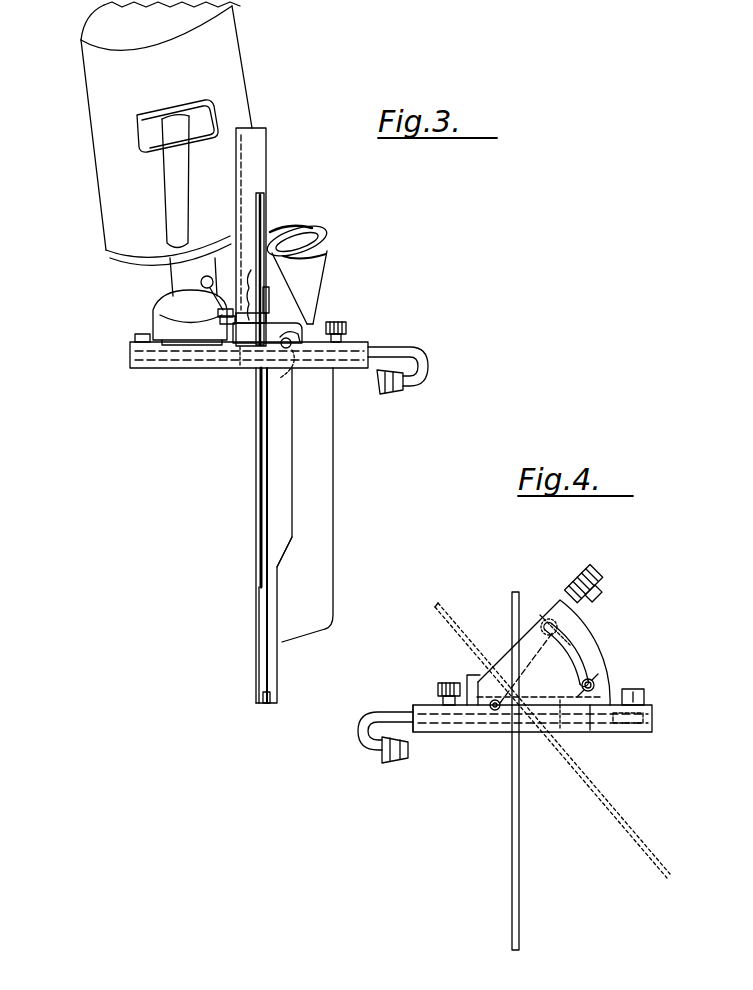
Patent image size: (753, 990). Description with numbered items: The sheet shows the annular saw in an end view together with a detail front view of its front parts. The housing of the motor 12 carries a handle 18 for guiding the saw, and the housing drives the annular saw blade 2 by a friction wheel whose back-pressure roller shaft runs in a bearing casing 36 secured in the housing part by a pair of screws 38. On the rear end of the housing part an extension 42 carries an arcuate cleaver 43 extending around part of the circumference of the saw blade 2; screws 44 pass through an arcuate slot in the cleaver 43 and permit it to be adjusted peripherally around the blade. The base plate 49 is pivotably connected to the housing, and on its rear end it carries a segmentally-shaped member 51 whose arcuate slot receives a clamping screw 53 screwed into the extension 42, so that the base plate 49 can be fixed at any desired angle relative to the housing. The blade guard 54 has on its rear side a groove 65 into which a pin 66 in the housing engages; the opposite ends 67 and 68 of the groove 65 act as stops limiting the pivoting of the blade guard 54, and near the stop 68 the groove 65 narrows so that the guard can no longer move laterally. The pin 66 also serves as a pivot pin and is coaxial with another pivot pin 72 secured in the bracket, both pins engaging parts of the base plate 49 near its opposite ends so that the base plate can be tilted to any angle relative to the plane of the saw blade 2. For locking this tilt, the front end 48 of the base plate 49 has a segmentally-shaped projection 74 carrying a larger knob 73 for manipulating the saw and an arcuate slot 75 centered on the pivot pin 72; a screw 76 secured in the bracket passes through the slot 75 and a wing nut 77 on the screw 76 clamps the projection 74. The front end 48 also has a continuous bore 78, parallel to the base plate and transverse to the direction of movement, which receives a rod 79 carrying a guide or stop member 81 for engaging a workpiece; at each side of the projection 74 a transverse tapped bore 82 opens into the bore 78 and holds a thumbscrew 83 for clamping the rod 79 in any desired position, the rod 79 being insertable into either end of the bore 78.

In FIG. 3, the motor 12 is at (233, 60).
In FIG. 3, the handle 18 is at (170, 183).
In FIG. 3, the clamping screw 53 is at (160, 318).
In FIG. 3, the segmentally-shaped member 51 is at (266, 153).
In FIG. 3, the arcuate cleaver 43 is at (265, 196).
In FIG. 3, the bearing casing 36 is at (322, 240).
In FIG. 3, the screws 38 is at (302, 230).
In FIG. 3, the extension 42 is at (226, 344).
In FIG. 3, the screws 44 is at (250, 328).
In FIG. 3, the pin 66 is at (302, 335).
In FIG. 3, the thumbscrew 83 is at (347, 330).
In FIG. 4, the thumbscrew 83 is at (455, 683).
In FIG. 3, the base plate 49 is at (150, 369).
In FIG. 4, the base plate 49 is at (440, 735).
In FIG. 3, the continuous bore 78 is at (238, 368).
In FIG. 4, the continuous bore 78 is at (560, 729).
In FIG. 3, the end of groove 67 is at (292, 368).
In FIG. 3, the rod 79 is at (396, 347).
In FIG. 4, the rod 79 is at (392, 711).
In FIG. 3, the guide or stop member 81 is at (384, 395).
In FIG. 4, the guide or stop member 81 is at (395, 760).
In FIG. 3, the blade guard 54 is at (334, 550).
In FIG. 3, the groove 65 is at (289, 518).
In FIG. 3, the stop 68 is at (271, 695).
In FIG. 4, the annular saw blade 2 is at (450, 606).
In FIG. 4, the front end of base plate 48 is at (632, 726).
In FIG. 4, the transverse tapped bore 82 is at (646, 697).
In FIG. 4, the segmentally-shaped projection 74 is at (586, 645).
In FIG. 4, the arcuate slot 75 is at (586, 668).
In FIG. 4, the knob 73 is at (588, 585).
In FIG. 4, the wing nut 77 is at (600, 686).
In FIG. 4, the screw 76 is at (592, 700).
In FIG. 4, the pivot pin 72 is at (493, 711).